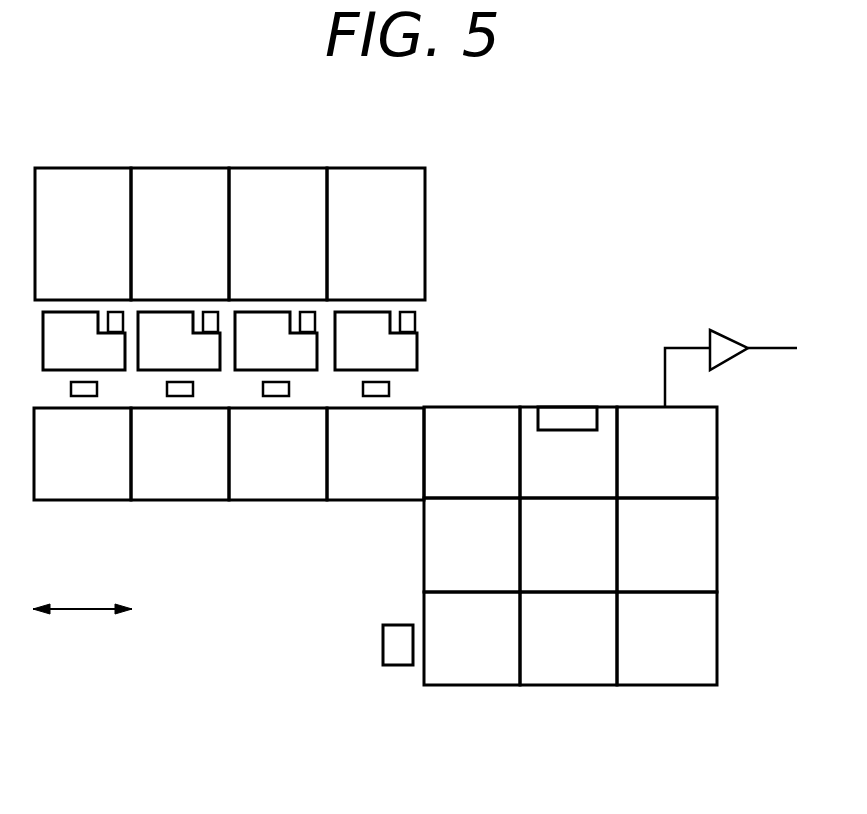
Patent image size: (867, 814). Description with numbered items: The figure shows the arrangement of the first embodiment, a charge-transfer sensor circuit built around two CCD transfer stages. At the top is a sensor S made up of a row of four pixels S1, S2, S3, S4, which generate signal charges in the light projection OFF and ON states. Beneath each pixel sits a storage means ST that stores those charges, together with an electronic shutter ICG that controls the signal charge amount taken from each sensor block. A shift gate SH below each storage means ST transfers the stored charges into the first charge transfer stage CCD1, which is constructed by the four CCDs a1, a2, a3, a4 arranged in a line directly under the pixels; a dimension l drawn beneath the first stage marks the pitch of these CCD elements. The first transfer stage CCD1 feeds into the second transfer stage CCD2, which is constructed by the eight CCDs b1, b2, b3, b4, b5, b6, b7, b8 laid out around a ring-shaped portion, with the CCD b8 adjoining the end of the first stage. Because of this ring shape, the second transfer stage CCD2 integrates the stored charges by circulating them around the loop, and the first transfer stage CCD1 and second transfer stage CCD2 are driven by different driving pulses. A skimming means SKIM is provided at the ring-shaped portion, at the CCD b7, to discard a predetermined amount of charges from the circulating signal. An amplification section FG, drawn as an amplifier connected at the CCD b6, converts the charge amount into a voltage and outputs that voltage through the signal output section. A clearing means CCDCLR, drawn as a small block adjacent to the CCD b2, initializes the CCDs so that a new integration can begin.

The sensor S is at (255, 234).
The pixel S1 is at (438, 168).
The pixel S2 is at (278, 234).
The pixel S3 is at (180, 234).
The pixel S4 is at (83, 234).
The storage means ST is at (417, 352).
The electronic shutter ICG is at (415, 322).
The shift gate SH is at (389, 389).
The first transfer stage CCD1 is at (229, 490).
The CCD a1 is at (375, 454).
The CCD a2 is at (278, 454).
The CCD a3 is at (180, 454).
The CCD a4 is at (82, 454).
The second transfer stage CCD2 is at (571, 583).
The CCD b1 is at (472, 545).
The CCD b2 is at (472, 638).
The CCD b3 is at (568, 638).
The CCD b4 is at (667, 638).
The CCD b5 is at (667, 545).
The CCD b6 is at (667, 452).
The CCD b7 is at (568, 452).
The CCD b8 is at (472, 452).
The skimming means SKIM is at (577, 414).
The amplification section FG is at (730, 335).
The clearing means CCDCLR is at (383, 636).
The pixel pitch dimension l is at (82, 597).